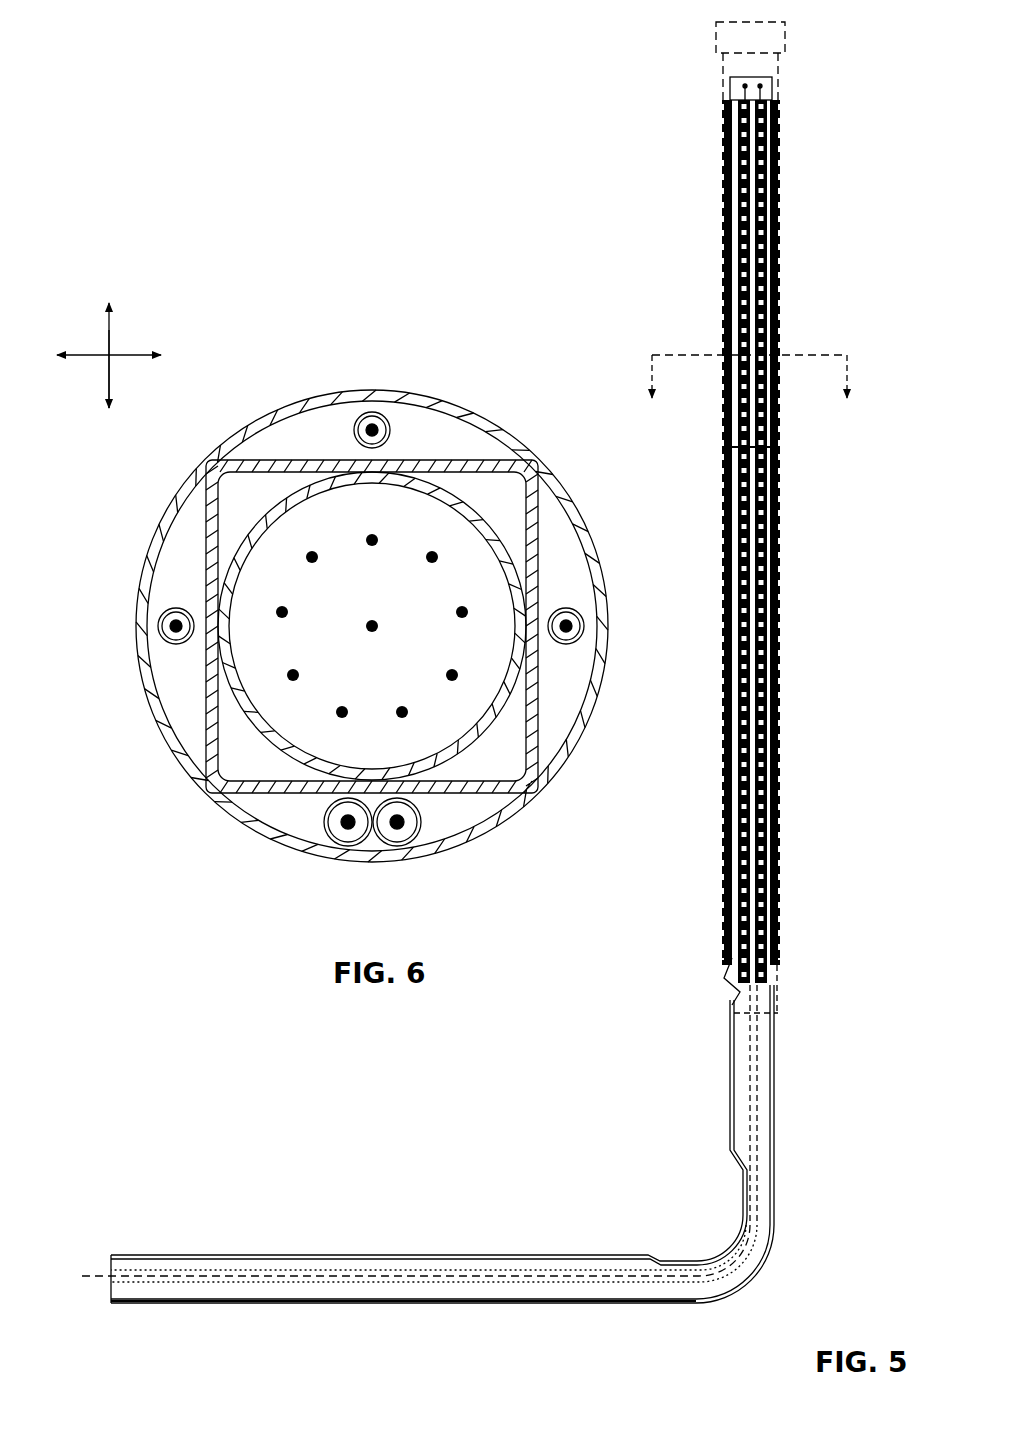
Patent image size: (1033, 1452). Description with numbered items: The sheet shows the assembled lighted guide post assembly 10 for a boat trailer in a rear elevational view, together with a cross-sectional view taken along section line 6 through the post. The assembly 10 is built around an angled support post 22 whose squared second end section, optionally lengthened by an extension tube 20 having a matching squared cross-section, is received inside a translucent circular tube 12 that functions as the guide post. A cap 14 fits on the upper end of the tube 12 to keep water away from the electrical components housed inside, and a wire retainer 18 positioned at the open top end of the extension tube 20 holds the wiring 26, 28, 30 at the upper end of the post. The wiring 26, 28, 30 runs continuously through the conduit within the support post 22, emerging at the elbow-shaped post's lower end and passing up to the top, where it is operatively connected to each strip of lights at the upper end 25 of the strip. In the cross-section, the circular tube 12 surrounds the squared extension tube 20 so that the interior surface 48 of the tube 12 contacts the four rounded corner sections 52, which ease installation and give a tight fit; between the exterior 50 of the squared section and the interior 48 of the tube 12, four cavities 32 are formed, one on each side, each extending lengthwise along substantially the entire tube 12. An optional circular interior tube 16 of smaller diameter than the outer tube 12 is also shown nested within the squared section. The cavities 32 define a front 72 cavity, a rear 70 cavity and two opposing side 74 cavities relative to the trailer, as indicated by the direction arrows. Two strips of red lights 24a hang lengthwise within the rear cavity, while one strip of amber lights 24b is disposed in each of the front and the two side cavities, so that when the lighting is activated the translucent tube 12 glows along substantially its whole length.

In FIG. 5, the assembly 10 is at (660, 62).
In FIG. 6, the translucent circular tube 12 is at (240, 825).
In FIG. 5, the translucent circular tube 12 is at (781, 72).
In FIG. 5, the cap 14 is at (772, 24).
In FIG. 6, the circular interior tube 16 is at (495, 512).
In FIG. 5, the circular interior tube 16 is at (780, 756).
In FIG. 5, the wire retainer 18 is at (740, 78).
In FIG. 6, the extension tube 20 is at (207, 520).
In FIG. 5, the extension tube 20 is at (726, 228).
In FIG. 5, the support post 22 is at (775, 1048).
In FIG. 6, the strip of lights 24a is at (348, 846).
In FIG. 6, the strip of lights 24b is at (372, 412).
In FIG. 5, the upper end of the strip of lights 25 is at (718, 101).
In FIG. 5, the wiring 26 is at (103, 1278).
In FIG. 5, the wiring 28 is at (92, 1278).
In FIG. 5, the wiring 30 is at (103, 1280).
In FIG. 6, the cavity 32 is at (444, 437).
In FIG. 6, the interior surface of the circular tube 48 is at (173, 548).
In FIG. 6, the exterior of the second end section 50 is at (322, 460).
In FIG. 6, the corner sections 52 is at (238, 466).
In FIG. 5, the section line 6 is at (750, 395).
In FIG. 6, the rear 70 is at (108, 382).
In FIG. 6, the front 72 is at (112, 330).
In FIG. 6, the side 74 is at (90, 352).